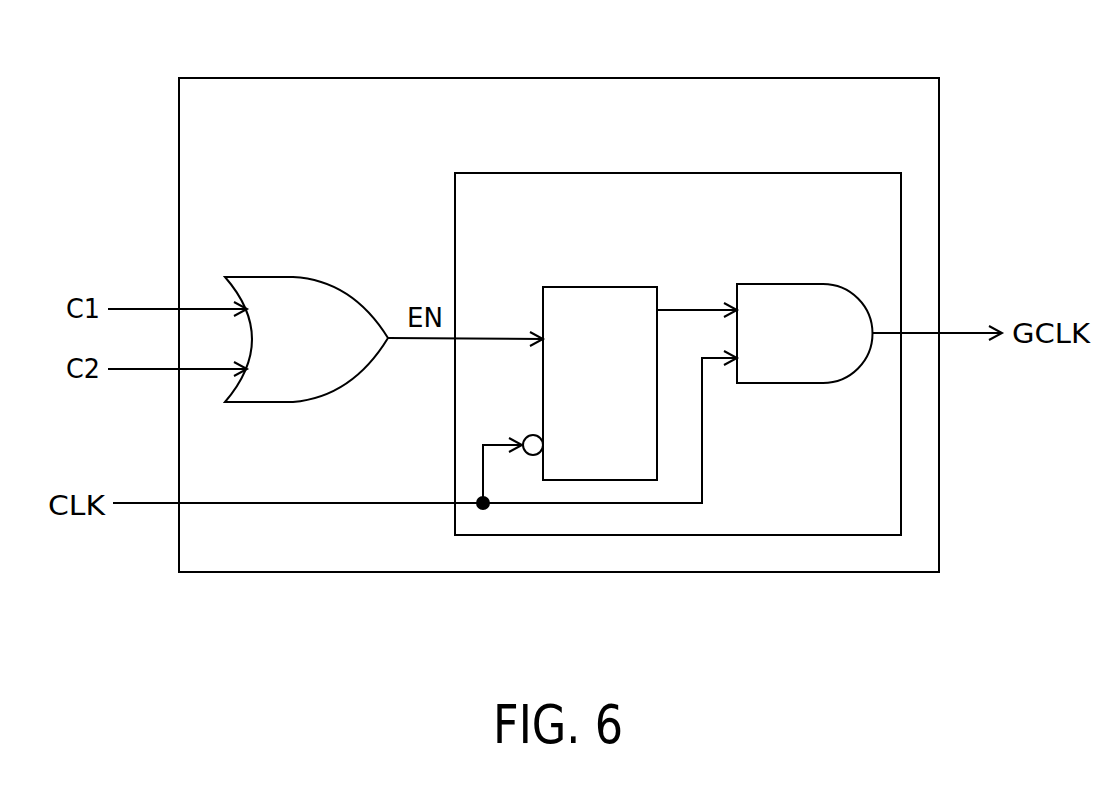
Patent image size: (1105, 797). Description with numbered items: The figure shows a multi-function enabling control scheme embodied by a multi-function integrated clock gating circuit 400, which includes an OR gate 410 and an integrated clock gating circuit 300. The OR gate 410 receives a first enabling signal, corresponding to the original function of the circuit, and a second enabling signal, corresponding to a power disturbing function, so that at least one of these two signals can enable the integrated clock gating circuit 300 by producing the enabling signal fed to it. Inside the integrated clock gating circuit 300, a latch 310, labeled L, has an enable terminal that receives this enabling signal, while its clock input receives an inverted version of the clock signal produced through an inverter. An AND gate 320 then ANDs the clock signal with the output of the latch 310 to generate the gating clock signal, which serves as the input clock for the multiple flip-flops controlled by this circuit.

The multi-function integrated clock gating circuit 400 is at (382, 78).
The integrated clock gating circuit 300 is at (680, 173).
The OR gate 410 is at (300, 277).
The latch 310 is at (573, 287).
The AND gate 320 is at (790, 385).